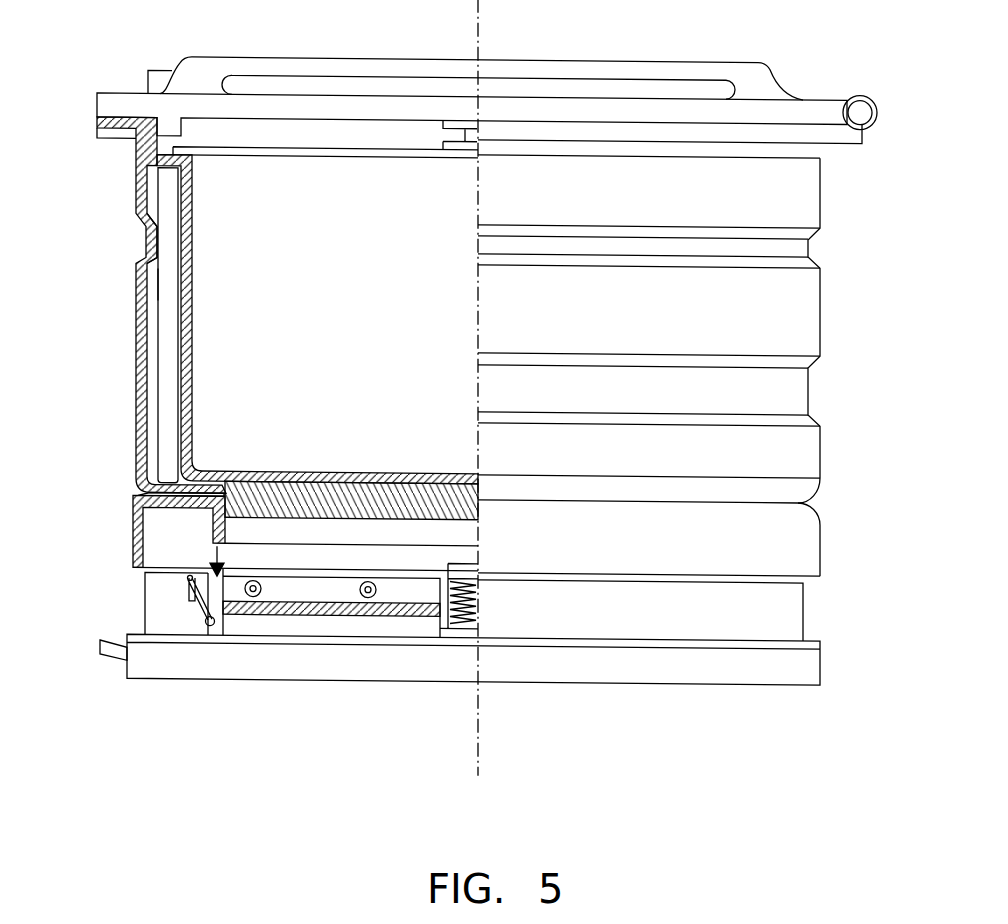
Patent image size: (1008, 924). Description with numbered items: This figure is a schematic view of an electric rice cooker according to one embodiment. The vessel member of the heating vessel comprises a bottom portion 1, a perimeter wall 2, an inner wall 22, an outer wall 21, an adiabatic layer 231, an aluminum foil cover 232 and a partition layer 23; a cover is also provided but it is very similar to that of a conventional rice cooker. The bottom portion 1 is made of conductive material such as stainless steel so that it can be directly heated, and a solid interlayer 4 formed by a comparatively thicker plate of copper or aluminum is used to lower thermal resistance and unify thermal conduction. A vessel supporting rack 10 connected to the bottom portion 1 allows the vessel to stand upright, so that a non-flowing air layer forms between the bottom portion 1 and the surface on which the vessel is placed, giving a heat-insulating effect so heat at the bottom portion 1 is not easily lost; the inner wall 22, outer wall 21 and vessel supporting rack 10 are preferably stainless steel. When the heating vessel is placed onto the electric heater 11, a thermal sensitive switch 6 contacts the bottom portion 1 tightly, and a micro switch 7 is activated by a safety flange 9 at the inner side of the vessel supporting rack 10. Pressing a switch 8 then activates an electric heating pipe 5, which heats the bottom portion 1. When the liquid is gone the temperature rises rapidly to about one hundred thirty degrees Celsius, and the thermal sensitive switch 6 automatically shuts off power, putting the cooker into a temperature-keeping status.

The bottom portion 1 is at (287, 518).
The perimeter wall 2 is at (803, 313).
The solid interlayer 4 is at (270, 482).
The electric heating pipe 5 is at (366, 594).
The thermal sensitive switch 6 is at (460, 570).
The micro switch 7 is at (188, 585).
The switch 8 is at (113, 648).
The safety flange 9 is at (215, 522).
The vessel supporting rack 10 is at (138, 497).
The electric heater 11 is at (777, 615).
The outer wall 21 is at (137, 323).
The inner wall 22 is at (187, 202).
The partition layer 23 is at (140, 433).
The adiabatic layer 231 is at (162, 230).
The aluminum foil cover 232 is at (157, 282).